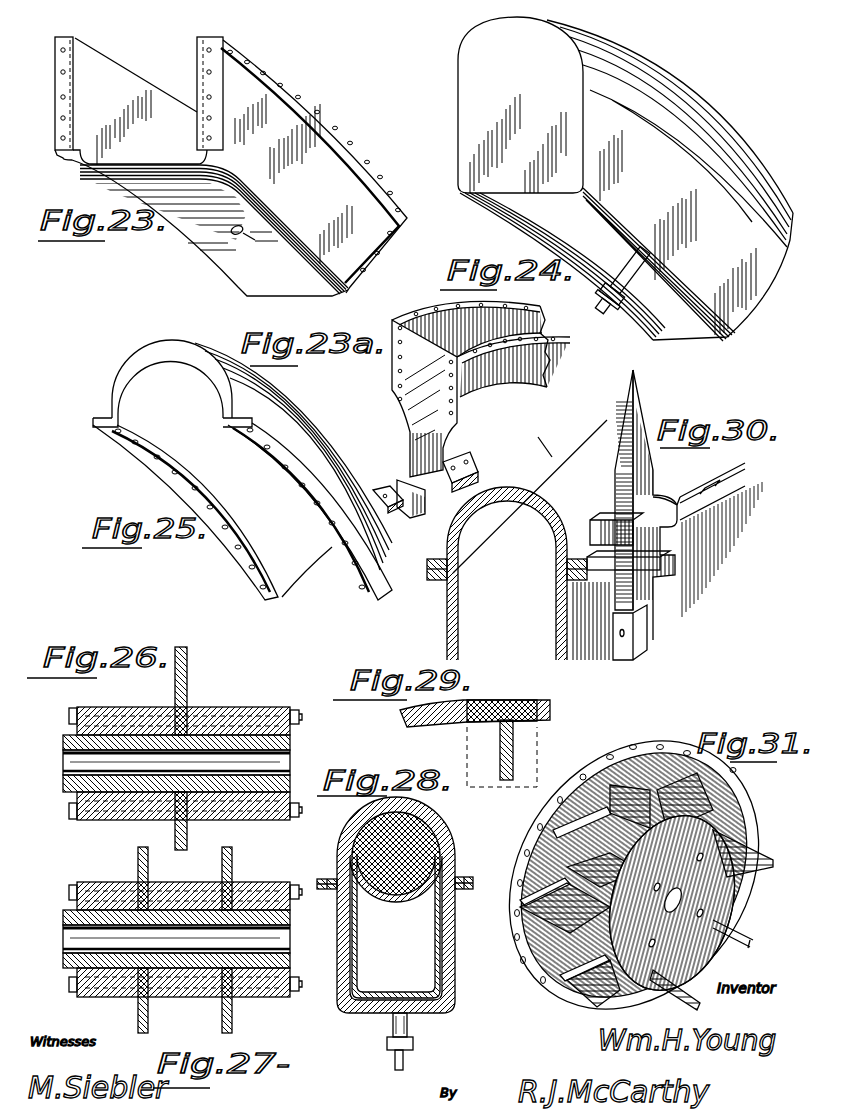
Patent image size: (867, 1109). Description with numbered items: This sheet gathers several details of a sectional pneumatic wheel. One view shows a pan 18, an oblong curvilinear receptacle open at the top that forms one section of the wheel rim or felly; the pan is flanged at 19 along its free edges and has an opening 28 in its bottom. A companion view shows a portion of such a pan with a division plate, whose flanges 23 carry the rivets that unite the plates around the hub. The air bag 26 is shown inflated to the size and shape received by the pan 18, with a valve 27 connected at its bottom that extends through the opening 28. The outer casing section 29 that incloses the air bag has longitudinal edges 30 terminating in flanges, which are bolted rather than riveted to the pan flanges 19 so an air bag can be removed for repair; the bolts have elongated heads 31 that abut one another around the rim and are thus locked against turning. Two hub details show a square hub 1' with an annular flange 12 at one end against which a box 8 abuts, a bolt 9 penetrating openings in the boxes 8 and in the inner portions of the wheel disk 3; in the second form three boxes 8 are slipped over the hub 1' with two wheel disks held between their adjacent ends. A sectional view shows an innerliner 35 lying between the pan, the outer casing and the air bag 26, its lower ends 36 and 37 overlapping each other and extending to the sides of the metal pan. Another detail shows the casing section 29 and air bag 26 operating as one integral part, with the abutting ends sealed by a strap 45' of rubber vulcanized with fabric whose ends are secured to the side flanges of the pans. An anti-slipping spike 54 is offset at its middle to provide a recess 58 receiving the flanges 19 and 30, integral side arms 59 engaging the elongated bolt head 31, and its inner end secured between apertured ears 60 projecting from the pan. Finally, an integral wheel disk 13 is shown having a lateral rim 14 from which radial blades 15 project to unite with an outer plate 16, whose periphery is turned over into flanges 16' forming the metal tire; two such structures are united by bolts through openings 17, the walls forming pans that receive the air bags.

In FIG. 26, the square hub 1' is at (200, 750).
In FIG. 27, the square hub 1' is at (159, 940).
In FIG. 26, the wheel disk 3 is at (188, 680).
In FIG. 27, the wheel disk 3 is at (221, 862).
In FIG. 26, the box 8 is at (162, 706).
In FIG. 27, the box 8 is at (113, 882).
In FIG. 26, the bolt 9 is at (134, 706).
In FIG. 27, the bolt 9 is at (262, 994).
In FIG. 26, the annular flange 12 is at (63, 741).
In FIG. 27, the annular flange 12 is at (63, 919).
In FIG. 31, the wheel disk 13 is at (717, 847).
In FIG. 31, the lateral rim 14 is at (622, 848).
In FIG. 31, the radial blades 15 is at (634, 875).
In FIG. 31, the outer plate 16 is at (634, 875).
In FIG. 31, the flanges 16' is at (634, 725).
In FIG. 31, the openings 17 is at (676, 895).
In FIG. 23, the pan 18 is at (231, 167).
In FIG. 23A, the pan 18 is at (471, 344).
In FIG. 30, the pan 18 is at (591, 621).
In FIG. 28, the pan 18 is at (452, 967).
In FIG. 23, the flanges 19 is at (217, 135).
In FIG. 23A, the flanges 19 is at (430, 372).
In FIG. 30, the flanges 19 is at (563, 596).
In FIG. 28, the flanges 19 is at (470, 897).
In FIG. 23A, the flanges 23 is at (472, 466).
In FIG. 24, the air bag 26 is at (625, 179).
In FIG. 29, the air bag 26 is at (514, 752).
In FIG. 28, the air bag 26 is at (353, 947).
In FIG. 24, the valve 27 is at (632, 282).
In FIG. 28, the valve 27 is at (395, 1025).
In FIG. 23, the opening 28 is at (239, 236).
In FIG. 23A, the outer casing section 29 is at (513, 433).
In FIG. 25, the outer casing section 29 is at (300, 438).
In FIG. 28, the outer casing section 29 is at (447, 835).
In FIG. 25, the longitudinal edges 30 is at (302, 482).
In FIG. 30, the longitudinal edges 30 is at (565, 571).
In FIG. 28, the longitudinal edges 30 is at (458, 878).
In FIG. 30, the elongated bolt heads 31 is at (562, 549).
In FIG. 28, the innerliner 35 is at (446, 912).
In FIG. 28, the lower end of innerliner 36 is at (407, 990).
In FIG. 28, the lower end of innerliner 37 is at (430, 1013).
In FIG. 29, the strap 45' is at (475, 694).
In FIG. 30, the spike 54 is at (616, 458).
In FIG. 30, the recess 58 is at (580, 553).
In FIG. 30, the side arms 59 is at (661, 497).
In FIG. 30, the apertured ears 60 is at (625, 650).